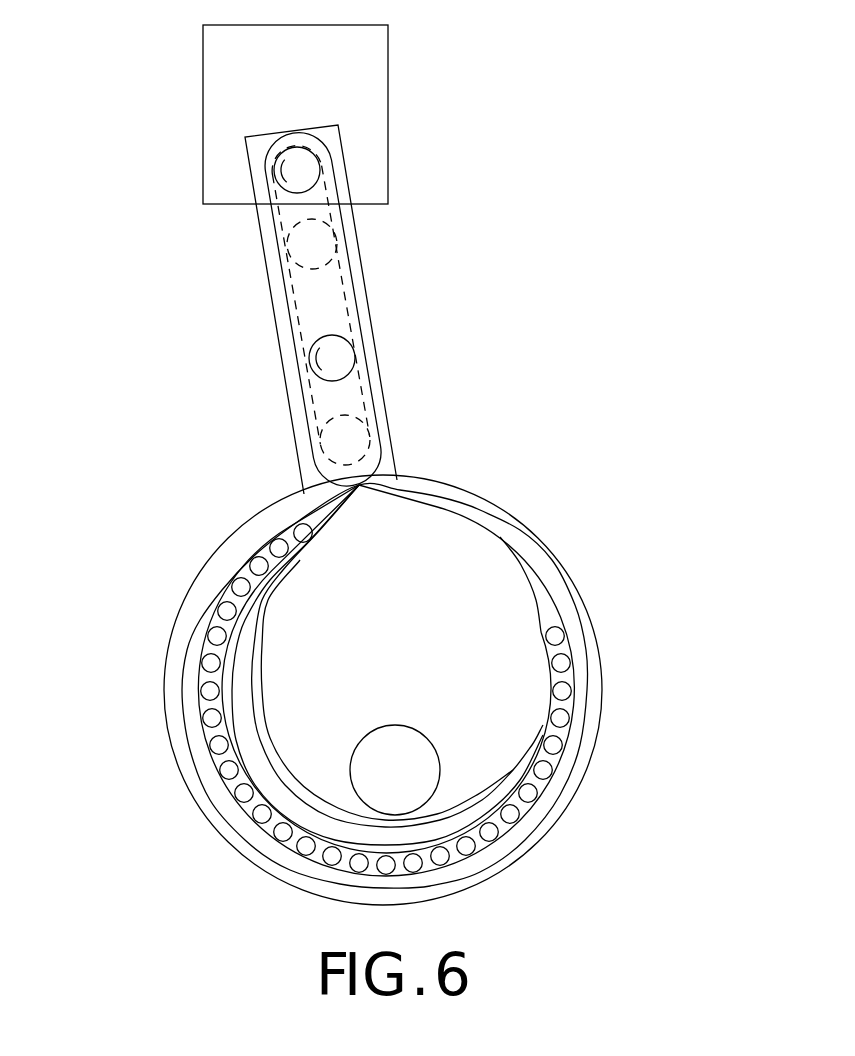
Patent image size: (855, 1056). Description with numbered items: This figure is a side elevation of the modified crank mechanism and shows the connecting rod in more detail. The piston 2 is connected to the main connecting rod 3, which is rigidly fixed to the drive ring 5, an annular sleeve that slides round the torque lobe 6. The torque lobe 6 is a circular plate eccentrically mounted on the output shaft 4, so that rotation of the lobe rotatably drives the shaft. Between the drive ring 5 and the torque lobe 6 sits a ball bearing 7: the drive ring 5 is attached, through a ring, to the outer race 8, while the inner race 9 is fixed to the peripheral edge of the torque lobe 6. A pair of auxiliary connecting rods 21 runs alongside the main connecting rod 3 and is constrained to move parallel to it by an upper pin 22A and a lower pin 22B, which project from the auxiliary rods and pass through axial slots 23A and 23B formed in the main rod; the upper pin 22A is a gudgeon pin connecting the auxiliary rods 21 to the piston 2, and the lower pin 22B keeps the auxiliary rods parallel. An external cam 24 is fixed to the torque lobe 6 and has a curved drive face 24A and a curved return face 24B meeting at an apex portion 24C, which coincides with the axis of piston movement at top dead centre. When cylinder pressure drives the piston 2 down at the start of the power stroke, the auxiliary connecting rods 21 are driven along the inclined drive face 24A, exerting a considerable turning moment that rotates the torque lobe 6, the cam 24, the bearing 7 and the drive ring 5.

The piston 2 is at (308, 86).
The connecting rod 3 is at (378, 273).
The auxiliary connecting rods 21 is at (342, 318).
The upper pin 22A is at (314, 167).
The lower pin 22B is at (340, 353).
The axial slot 23A is at (343, 214).
The axial slot 23B is at (380, 400).
The output shaft 4 is at (410, 794).
The drive ring 5 is at (618, 695).
The torque lobe 6 is at (232, 716).
The ball bearing 7 is at (229, 539).
The outer race 8 is at (592, 613).
The inner race 9 is at (277, 827).
The external cam 24 is at (418, 622).
The drive face 24A is at (244, 626).
The return face 24B is at (250, 771).
The apex portion 24C is at (367, 499).